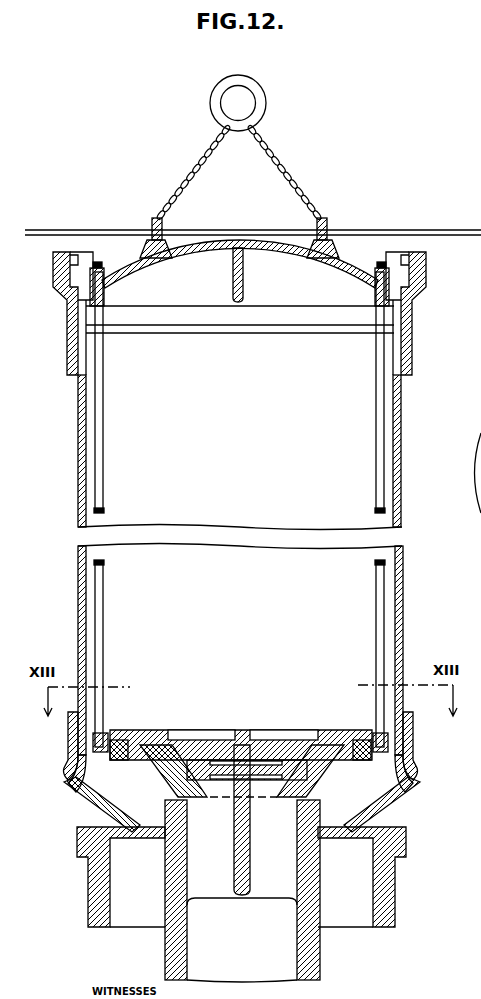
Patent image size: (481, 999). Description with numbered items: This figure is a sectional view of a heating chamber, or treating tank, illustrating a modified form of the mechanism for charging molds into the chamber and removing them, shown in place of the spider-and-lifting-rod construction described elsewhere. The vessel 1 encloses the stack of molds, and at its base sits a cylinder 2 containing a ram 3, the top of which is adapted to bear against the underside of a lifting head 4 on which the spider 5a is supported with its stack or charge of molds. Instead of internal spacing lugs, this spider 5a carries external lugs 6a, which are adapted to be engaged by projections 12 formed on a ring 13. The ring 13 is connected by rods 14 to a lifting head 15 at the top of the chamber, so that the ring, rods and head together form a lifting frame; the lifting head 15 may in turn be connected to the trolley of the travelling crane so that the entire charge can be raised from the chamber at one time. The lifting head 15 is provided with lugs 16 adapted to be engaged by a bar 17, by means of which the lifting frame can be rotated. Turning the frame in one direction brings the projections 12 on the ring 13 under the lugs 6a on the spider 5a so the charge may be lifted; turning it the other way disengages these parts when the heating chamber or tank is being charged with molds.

The vessel body 1 is at (402, 590).
The cylinder 2 is at (319, 958).
The ram 3 is at (242, 927).
The lifting head 4 is at (176, 783).
The spider 5a is at (327, 729).
The external lugs 6a is at (121, 733).
The projections 12 is at (92, 798).
The ring 13 is at (76, 773).
The rods 14 is at (104, 605).
The lifting head 15 is at (287, 286).
The lugs 16 is at (326, 222).
The bar 17 is at (457, 229).